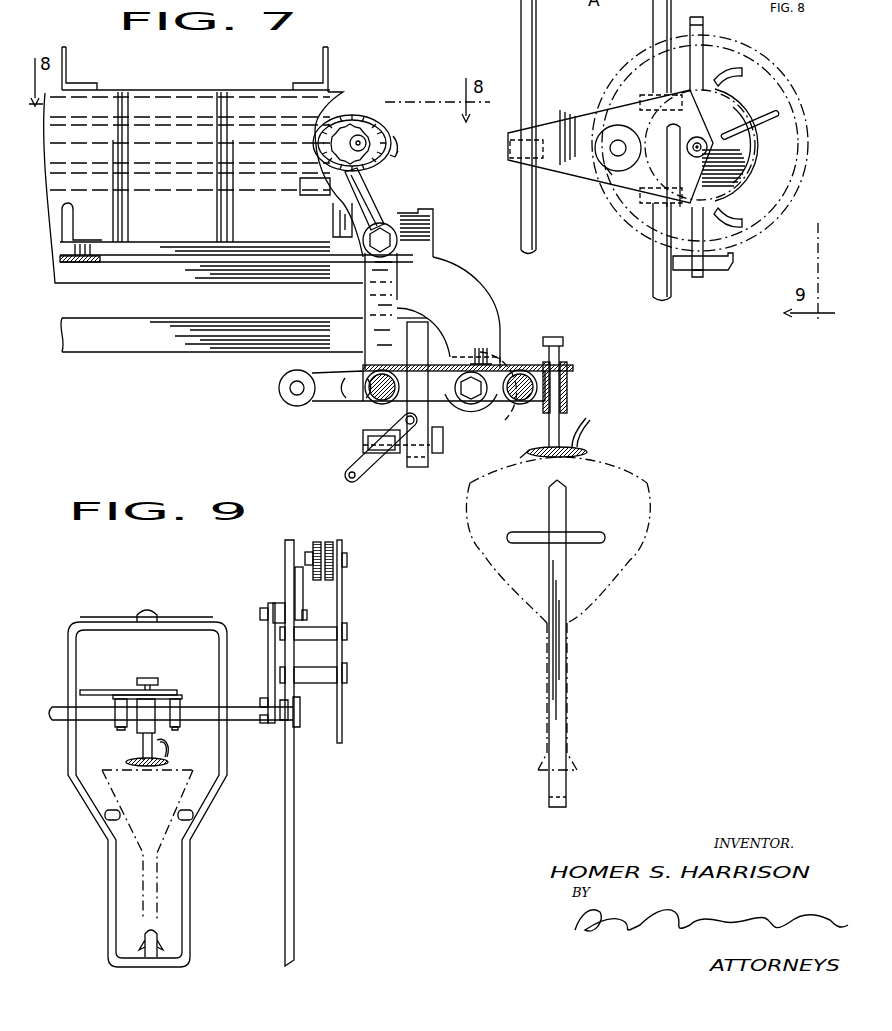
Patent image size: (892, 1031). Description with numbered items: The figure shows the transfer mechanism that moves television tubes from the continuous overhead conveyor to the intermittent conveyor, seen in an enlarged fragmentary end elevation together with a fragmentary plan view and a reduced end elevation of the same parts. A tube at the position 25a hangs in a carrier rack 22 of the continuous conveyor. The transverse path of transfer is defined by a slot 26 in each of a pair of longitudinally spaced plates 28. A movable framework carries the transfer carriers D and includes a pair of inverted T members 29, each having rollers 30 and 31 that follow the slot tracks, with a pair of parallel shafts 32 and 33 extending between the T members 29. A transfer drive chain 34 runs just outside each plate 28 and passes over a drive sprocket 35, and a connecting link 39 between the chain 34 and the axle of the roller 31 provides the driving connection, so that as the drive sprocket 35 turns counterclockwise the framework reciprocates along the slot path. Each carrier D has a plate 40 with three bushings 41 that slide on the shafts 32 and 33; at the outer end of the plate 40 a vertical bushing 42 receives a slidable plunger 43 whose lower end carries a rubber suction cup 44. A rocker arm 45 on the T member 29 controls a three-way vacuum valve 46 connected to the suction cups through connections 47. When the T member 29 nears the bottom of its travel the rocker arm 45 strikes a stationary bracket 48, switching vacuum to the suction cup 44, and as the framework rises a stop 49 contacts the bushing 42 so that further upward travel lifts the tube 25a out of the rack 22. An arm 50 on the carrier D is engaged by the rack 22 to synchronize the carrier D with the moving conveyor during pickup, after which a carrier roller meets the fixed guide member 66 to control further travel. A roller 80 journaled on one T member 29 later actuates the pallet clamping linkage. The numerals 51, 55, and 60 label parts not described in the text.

In FIG. 7, the carrier rack 22 is at (557, 521).
In FIG. 8, the carrier rack 22 is at (704, 34).
In FIG. 9, the carrier rack 22 is at (90, 803).
In FIG. 7, the tube position on continuous conveyor 25a is at (620, 577).
In FIG. 7, the slot 26 is at (478, 322).
In FIG. 9, the plate 28 is at (295, 852).
In FIG. 7, the inverted T member 29 is at (337, 388).
In FIG. 9, the inverted T member 29 is at (270, 652).
In FIG. 7, the roller 30 is at (540, 350).
In FIG. 7, the roller 31 is at (398, 239).
In FIG. 9, the roller 31 is at (284, 603).
In FIG. 7, the shaft 32 is at (376, 400).
In FIG. 8, the shaft 32 is at (522, 45).
In FIG. 7, the shaft 33 is at (517, 393).
In FIG. 8, the shaft 33 is at (662, 2).
In FIG. 9, the shaft 33 is at (244, 712).
In FIG. 7, the transfer drive chain 34 is at (322, 112).
In FIG. 7, the drive sprocket 35 is at (376, 140).
In FIG. 9, the drive sprocket 35 is at (316, 542).
In FIG. 7, the connecting link 39 is at (383, 206).
In FIG. 9, the connecting link 39 is at (299, 601).
In FIG. 8, the plate 40 is at (563, 126).
In FIG. 8, the bushing 41 is at (645, 92).
In FIG. 9, the bushing 41 is at (180, 703).
In FIG. 7, the vertical bushing 42 is at (567, 387).
In FIG. 7, the plunger 43 is at (567, 407).
In FIG. 7, the suction cup 44 is at (534, 449).
In FIG. 7, the rocker arm 45 is at (360, 467).
In FIG. 7, the three-way vacuum valve 46 is at (405, 455).
In FIG. 7, the connection 47 is at (580, 437).
In FIG. 8, the connection 47 is at (760, 107).
In FIG. 9, the connection 47 is at (168, 745).
In FIG. 7, the stationary bracket 48 is at (428, 440).
In FIG. 7, the stop 49 is at (563, 340).
In FIG. 8, the arm 50 is at (718, 272).
In FIG. 9, the arm 50 is at (85, 692).
In FIG. 7, the stop 51 is at (485, 345).
In FIG. 8, the stop 51 is at (607, 160).
In FIG. 9, the stop 51 is at (158, 683).
In FIG. 7, the guide 55 is at (338, 222).
In FIG. 7, the bracket 60 is at (72, 240).
In FIG. 7, the fixed guide member 66 is at (143, 259).
In FIG. 7, the roller 80 is at (292, 406).
In FIG. 8, the transfer carrier D is at (640, 170).
In FIG. 9, the transfer carrier D is at (126, 690).